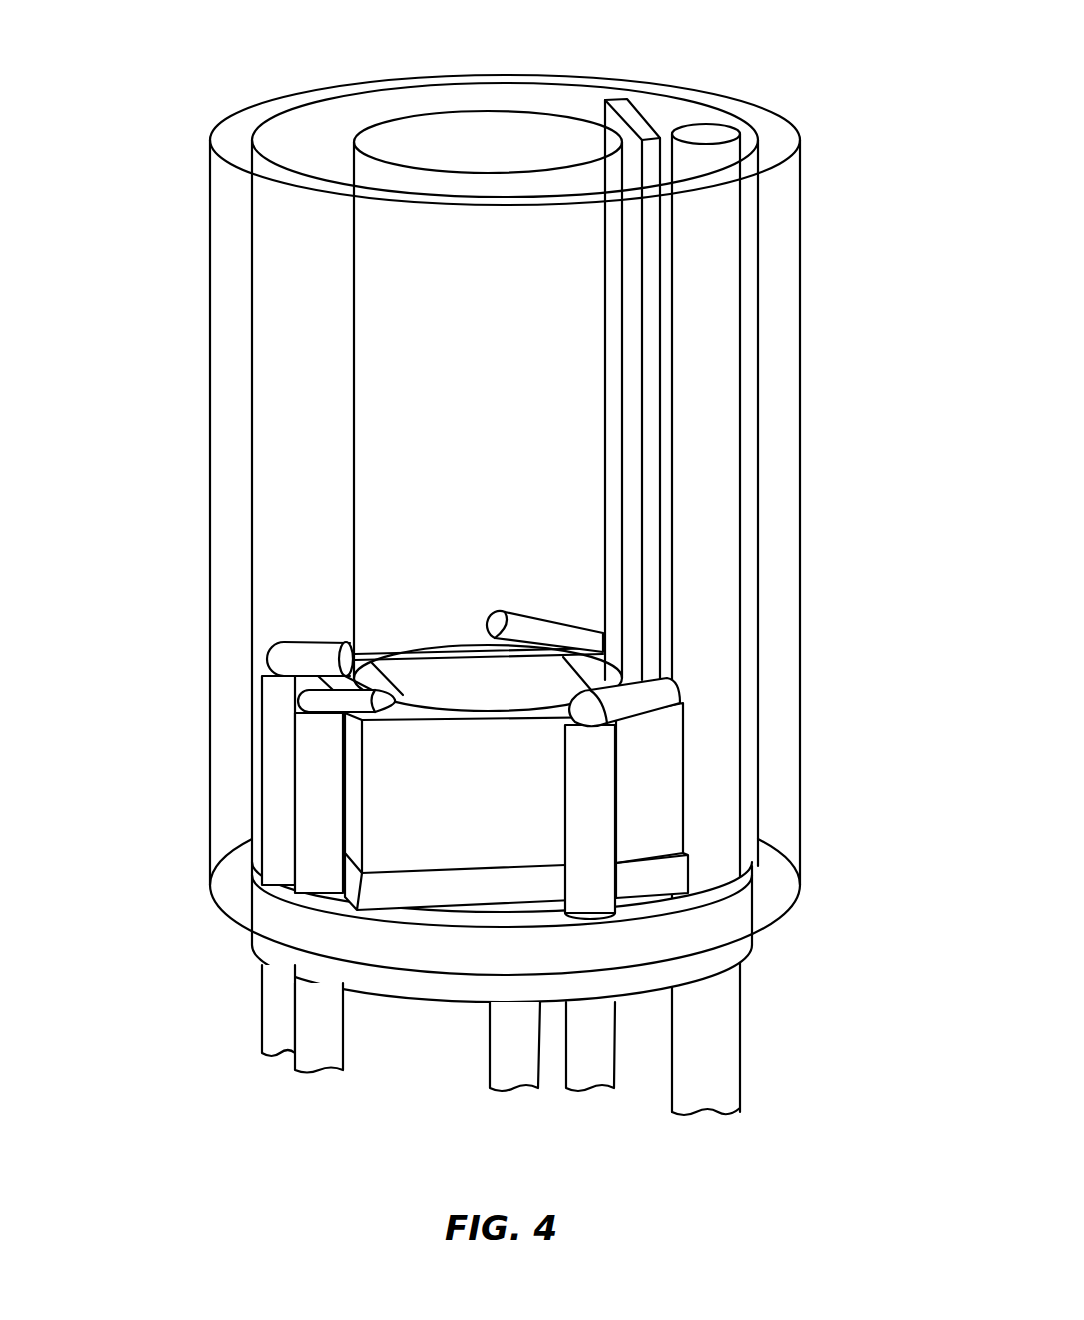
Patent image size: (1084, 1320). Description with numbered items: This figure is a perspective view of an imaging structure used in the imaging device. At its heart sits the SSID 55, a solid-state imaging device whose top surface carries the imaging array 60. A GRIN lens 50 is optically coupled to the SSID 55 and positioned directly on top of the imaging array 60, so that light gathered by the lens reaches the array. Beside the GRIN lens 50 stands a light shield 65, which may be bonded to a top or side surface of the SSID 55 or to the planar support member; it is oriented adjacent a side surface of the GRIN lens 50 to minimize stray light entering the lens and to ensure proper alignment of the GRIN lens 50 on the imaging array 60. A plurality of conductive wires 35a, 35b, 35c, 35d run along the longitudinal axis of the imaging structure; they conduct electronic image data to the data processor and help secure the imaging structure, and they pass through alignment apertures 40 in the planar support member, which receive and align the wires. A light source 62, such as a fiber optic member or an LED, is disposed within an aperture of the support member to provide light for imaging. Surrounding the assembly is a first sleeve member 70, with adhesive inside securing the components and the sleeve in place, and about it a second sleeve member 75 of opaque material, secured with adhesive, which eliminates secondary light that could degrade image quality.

The conductive wire 35a is at (600, 772).
The conductive wire 35b is at (490, 635).
The conductive wire 35c is at (330, 1020).
The conductive wire 35d is at (270, 1013).
The alignment aperture 40 is at (722, 962).
The GRIN lens 50 is at (527, 128).
The SSID 55 is at (660, 830).
The imaging array 60 is at (410, 668).
The light source 62 is at (715, 432).
The light shield 65 is at (630, 122).
The first sleeve member 70 is at (278, 117).
The second sleeve member 75 is at (212, 127).